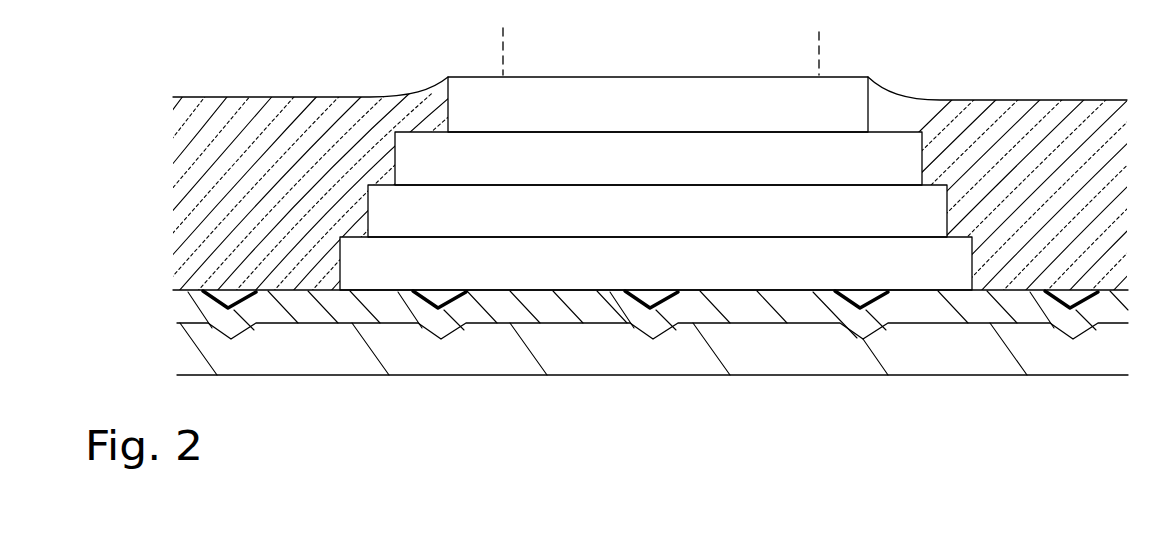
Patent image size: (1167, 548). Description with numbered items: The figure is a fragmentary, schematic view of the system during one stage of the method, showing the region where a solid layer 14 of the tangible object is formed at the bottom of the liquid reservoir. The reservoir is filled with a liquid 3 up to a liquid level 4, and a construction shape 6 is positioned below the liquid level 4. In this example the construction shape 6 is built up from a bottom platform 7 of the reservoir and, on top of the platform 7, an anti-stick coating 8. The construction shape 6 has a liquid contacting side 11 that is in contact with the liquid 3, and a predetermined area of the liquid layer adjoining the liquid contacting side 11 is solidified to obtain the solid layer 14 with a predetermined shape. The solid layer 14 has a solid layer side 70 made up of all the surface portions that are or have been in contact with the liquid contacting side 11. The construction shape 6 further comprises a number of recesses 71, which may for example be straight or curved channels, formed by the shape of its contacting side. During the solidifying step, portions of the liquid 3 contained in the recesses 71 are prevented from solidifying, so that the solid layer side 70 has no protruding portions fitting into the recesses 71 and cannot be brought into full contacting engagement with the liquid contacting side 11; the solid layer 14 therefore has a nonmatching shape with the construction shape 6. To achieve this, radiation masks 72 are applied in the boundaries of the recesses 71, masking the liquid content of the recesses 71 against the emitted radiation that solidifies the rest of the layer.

The liquid 3 is at (270, 140).
The liquid level 4 is at (216, 95).
The construction shape 6 is at (652, 402).
The bottom platform 7 is at (933, 358).
The anti-stick coating 8 is at (973, 308).
The liquid contacting side 11 is at (589, 294).
The solid layer 14 is at (763, 265).
The solid layer side 70 is at (656, 242).
The recesses 71 is at (232, 277).
The radiation masks 72 is at (216, 292).